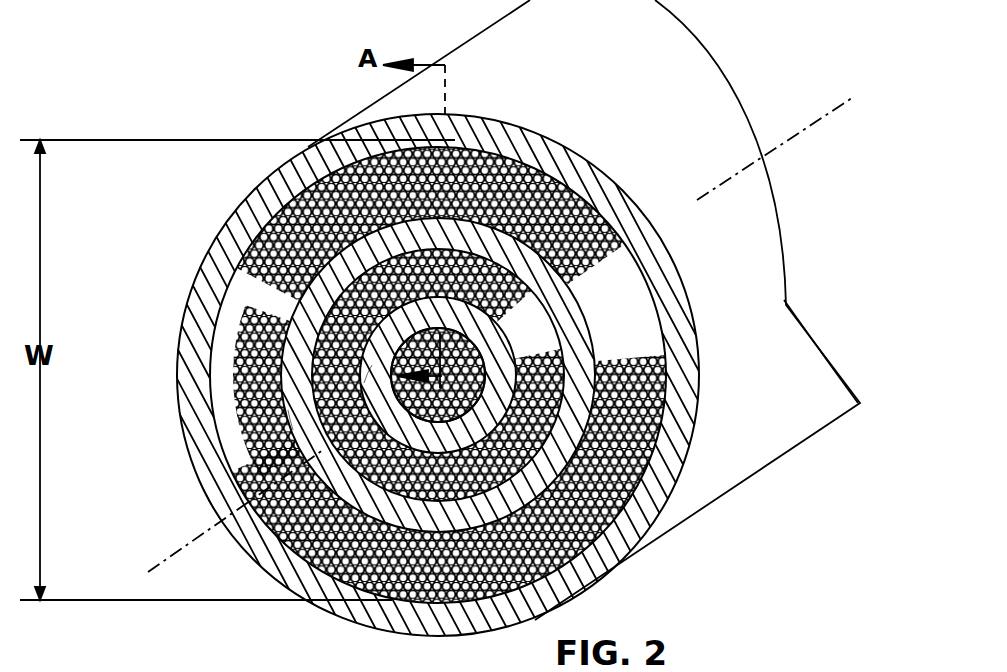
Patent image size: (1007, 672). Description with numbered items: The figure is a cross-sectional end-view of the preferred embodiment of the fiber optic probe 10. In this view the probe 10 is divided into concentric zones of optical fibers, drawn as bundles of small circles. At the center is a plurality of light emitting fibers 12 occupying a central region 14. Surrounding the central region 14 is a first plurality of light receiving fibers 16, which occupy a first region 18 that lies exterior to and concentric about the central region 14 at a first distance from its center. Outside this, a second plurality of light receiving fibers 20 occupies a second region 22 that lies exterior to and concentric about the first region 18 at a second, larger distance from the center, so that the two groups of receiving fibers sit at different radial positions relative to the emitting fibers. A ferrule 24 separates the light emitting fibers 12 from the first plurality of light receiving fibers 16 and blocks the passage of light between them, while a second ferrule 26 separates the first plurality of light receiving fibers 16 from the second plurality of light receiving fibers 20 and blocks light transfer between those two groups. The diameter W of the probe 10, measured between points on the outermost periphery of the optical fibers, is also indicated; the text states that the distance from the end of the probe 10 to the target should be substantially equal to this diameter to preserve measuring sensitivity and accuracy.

The fiber optic probe 10 is at (667, 540).
The light emitting fibers 12 is at (487, 347).
The central region 14 is at (478, 335).
The first plurality of light receiving fibers 16 is at (527, 290).
The first region 18 is at (318, 271).
The second plurality of light receiving fibers 20 is at (493, 160).
The second region 22 is at (568, 183).
The ferrule 24 is at (358, 386).
The ferrule 26 is at (287, 420).